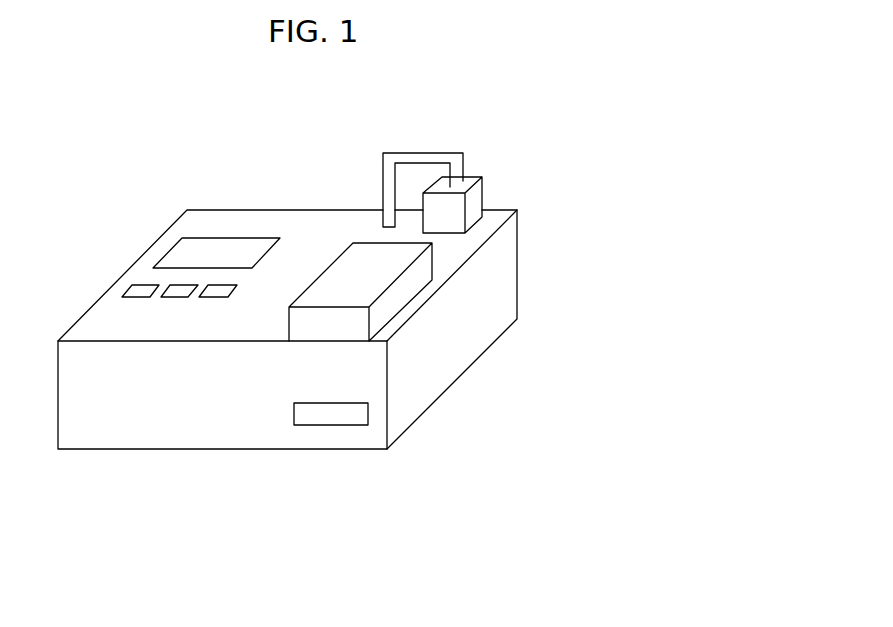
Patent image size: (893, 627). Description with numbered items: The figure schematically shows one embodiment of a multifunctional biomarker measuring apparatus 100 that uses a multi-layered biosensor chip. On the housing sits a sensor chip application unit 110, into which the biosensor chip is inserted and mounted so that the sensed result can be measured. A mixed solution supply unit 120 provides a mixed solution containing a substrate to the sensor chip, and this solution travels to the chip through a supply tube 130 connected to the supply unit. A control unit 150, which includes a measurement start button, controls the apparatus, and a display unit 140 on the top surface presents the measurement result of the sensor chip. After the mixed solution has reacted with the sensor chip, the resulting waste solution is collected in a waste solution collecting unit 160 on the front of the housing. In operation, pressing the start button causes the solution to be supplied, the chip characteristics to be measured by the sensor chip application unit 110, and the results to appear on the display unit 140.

The multifunctional biomarker measuring apparatus 100 is at (192, 472).
The sensor chip application unit 110 is at (397, 290).
The mixed solution supply unit 120 is at (482, 180).
The supply tube 130 is at (418, 152).
The display unit 140 is at (227, 238).
The control unit 150 is at (140, 292).
The waste solution collecting unit 160 is at (330, 415).